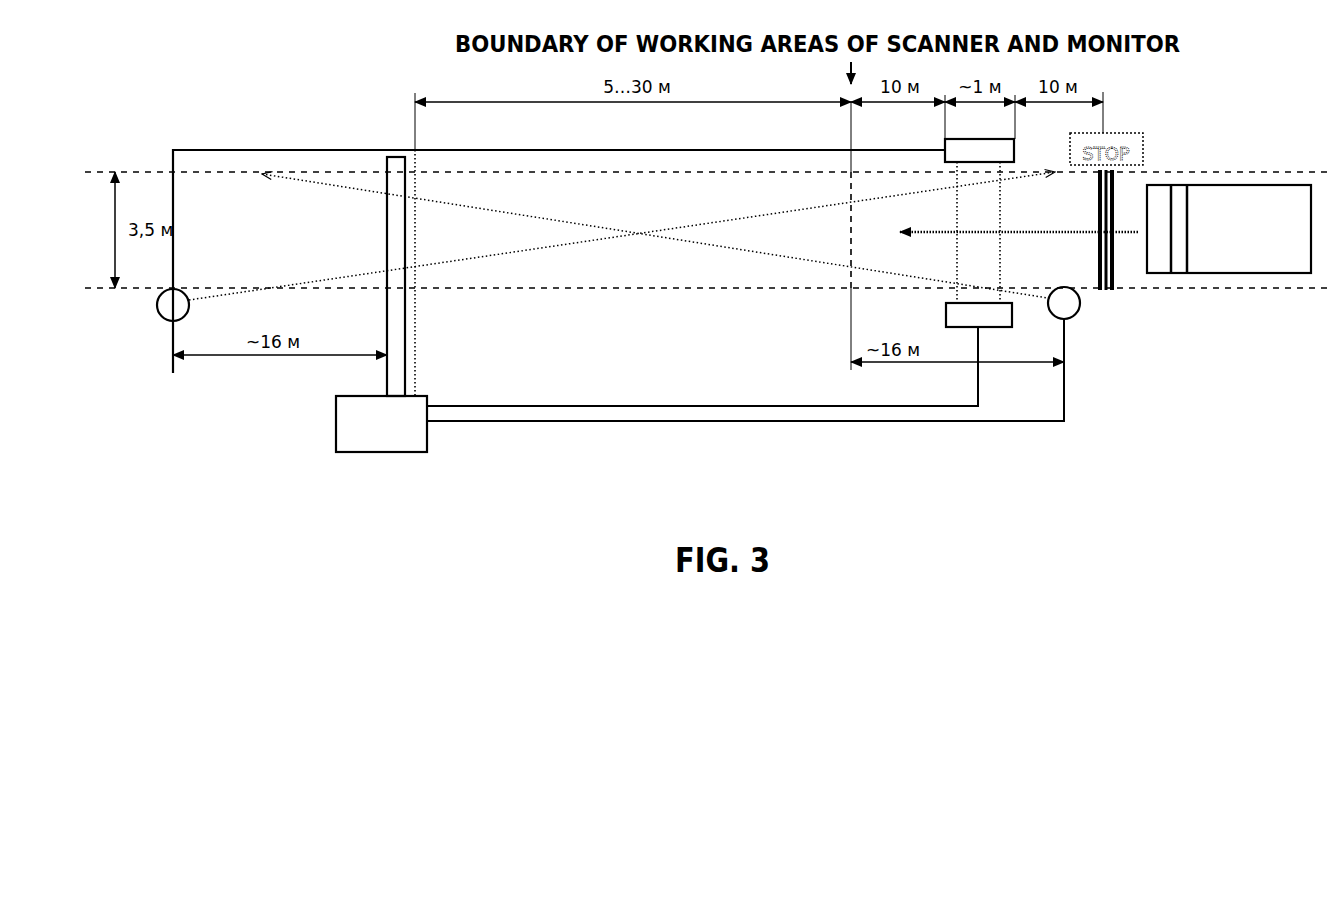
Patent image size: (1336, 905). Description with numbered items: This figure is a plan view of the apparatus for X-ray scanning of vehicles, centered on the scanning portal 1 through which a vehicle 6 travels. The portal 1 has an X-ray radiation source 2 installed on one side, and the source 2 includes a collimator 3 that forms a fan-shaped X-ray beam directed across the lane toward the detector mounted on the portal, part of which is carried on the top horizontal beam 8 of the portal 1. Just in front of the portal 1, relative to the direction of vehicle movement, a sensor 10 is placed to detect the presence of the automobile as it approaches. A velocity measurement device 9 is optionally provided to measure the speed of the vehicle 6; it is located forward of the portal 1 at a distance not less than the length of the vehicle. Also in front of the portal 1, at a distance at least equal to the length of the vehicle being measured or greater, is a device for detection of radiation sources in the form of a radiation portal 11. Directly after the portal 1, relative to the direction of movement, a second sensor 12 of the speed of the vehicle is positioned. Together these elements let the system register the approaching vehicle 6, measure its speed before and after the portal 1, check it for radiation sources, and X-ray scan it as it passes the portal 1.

The portal 1 is at (381, 424).
The X-ray radiation source 2 is at (381, 424).
The collimator 3 is at (381, 424).
The vehicle 6 is at (1229, 229).
The top horizontal beam 8 is at (396, 276).
The velocity measurement device 9 is at (1064, 303).
The sensor 10 is at (418, 274).
The radiation portal 11 is at (979, 233).
The second sensor 12 is at (173, 305).